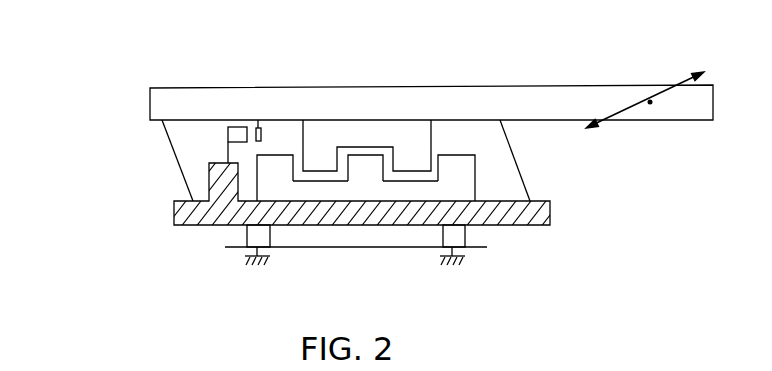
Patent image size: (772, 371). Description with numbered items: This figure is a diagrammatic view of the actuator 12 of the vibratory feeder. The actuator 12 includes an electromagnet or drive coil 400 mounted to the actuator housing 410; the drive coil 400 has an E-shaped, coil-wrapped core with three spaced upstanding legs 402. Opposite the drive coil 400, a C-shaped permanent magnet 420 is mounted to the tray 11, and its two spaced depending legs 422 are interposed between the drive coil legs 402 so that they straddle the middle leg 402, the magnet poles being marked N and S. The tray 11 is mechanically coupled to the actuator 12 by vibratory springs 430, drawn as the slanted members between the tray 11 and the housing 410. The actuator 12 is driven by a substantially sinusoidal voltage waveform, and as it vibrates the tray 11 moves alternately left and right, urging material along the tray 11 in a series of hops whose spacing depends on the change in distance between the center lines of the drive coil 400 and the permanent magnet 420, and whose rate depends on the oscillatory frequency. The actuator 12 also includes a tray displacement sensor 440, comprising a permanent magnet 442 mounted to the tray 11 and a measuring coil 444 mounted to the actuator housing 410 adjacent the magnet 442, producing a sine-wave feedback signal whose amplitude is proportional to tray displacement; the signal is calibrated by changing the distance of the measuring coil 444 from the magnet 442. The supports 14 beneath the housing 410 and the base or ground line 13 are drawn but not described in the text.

The tray 11 is at (456, 116).
The actuator 12 is at (158, 242).
The support rail / ground 13 is at (370, 248).
The support 14 is at (247, 230).
The drive coil 400 is at (317, 192).
The upstanding legs 402 is at (277, 154).
The actuator housing 410 is at (552, 210).
The permanent magnet 420 is at (368, 127).
The depending legs 422 is at (302, 153).
The vibratory springs 430 is at (183, 175).
The tray displacement sensor 440 is at (216, 129).
The permanent magnet 442 is at (259, 122).
The measuring coil 444 is at (240, 126).